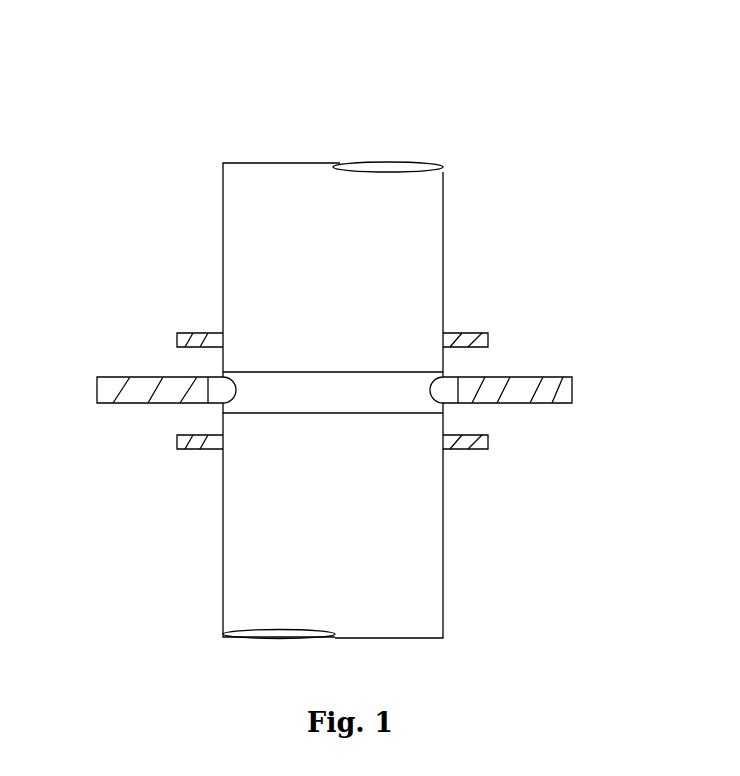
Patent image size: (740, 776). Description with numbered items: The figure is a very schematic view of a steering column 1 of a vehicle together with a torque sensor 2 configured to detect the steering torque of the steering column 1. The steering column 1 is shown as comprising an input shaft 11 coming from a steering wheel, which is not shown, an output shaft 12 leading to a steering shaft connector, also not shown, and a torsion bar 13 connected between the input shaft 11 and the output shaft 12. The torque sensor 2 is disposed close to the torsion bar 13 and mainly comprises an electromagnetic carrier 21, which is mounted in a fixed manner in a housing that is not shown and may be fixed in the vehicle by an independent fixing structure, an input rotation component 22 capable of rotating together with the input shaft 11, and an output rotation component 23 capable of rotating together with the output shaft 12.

The steering column 1 is at (373, 330).
The input shaft 11 is at (408, 275).
The output shaft 12 is at (407, 507).
The torsion bar 13 is at (275, 393).
The torque sensor 2 is at (349, 383).
The electromagnetic carrier 21 is at (545, 392).
The input rotation component 22 is at (488, 335).
The output rotation component 23 is at (476, 437).